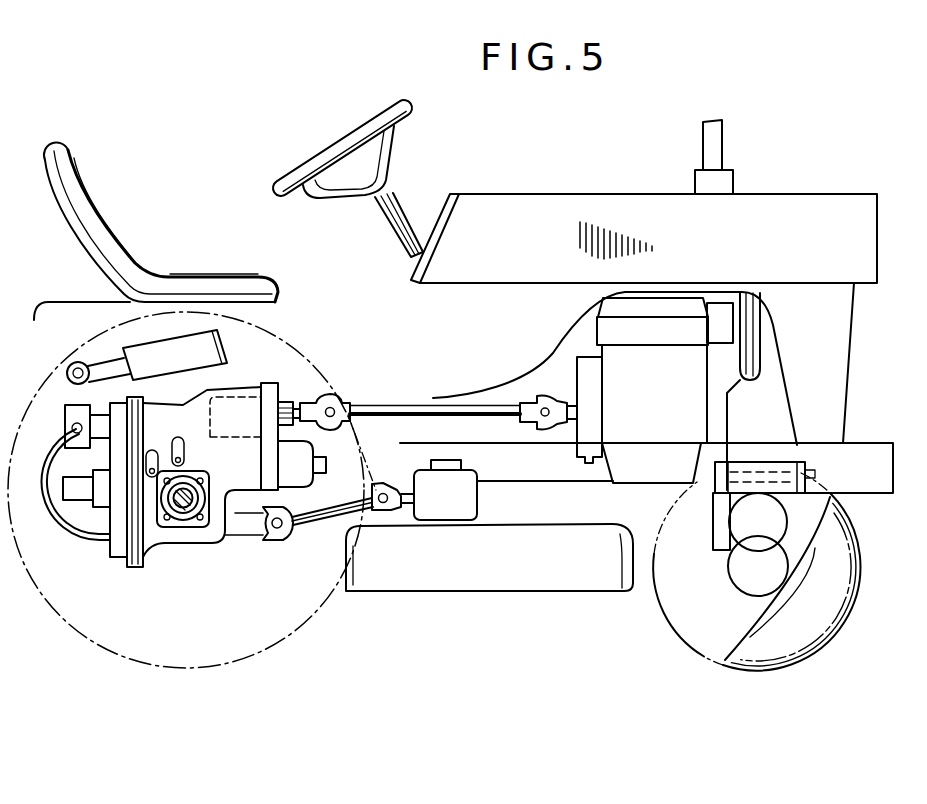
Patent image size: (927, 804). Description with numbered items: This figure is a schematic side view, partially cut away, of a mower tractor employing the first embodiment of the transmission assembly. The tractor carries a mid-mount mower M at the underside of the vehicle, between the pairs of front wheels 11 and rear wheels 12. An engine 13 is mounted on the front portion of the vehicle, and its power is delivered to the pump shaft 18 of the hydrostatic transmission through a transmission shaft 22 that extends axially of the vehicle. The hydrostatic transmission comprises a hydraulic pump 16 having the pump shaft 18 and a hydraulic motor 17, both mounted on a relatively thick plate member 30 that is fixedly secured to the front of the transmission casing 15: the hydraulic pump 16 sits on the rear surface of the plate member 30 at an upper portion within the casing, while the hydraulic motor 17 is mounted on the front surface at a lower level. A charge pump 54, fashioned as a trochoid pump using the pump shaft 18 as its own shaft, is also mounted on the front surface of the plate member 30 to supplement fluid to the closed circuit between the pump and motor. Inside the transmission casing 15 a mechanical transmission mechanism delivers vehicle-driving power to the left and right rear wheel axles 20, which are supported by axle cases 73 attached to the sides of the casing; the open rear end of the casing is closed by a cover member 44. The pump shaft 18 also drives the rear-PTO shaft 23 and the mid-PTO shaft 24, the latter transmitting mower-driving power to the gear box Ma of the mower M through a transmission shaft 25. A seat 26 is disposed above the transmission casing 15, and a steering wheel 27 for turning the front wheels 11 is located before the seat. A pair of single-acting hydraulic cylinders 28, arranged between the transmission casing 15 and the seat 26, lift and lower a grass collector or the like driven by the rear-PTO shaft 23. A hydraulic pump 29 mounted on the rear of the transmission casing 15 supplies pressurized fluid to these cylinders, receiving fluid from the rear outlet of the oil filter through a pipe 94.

The front wheels 11 is at (763, 650).
The rear wheels 12 is at (306, 626).
The engine 13 is at (650, 362).
The transmission casing 15 is at (298, 333).
The hydraulic pump 16 is at (200, 380).
The hydraulic motor 17 is at (297, 468).
The pump shaft 18 is at (313, 395).
The rear wheel axles 20 is at (182, 512).
The transmission shaft 22 is at (487, 406).
The rear-PTO shaft 23 is at (82, 490).
The mid-PTO shaft 24 is at (232, 536).
The transmission shaft 25 is at (343, 494).
The seat 26 is at (98, 217).
The steering wheel 27 is at (375, 122).
The single-acting hydraulic cylinders 28 is at (175, 343).
The hydraulic pump 29 is at (72, 404).
The plate member 30 is at (288, 400).
The cover member 44 is at (118, 550).
The charge pump 54 is at (283, 407).
The axle cases 73 is at (183, 498).
The pipe 94 is at (45, 500).
The mid-mount mower M is at (508, 563).
The gear box Ma is at (466, 507).